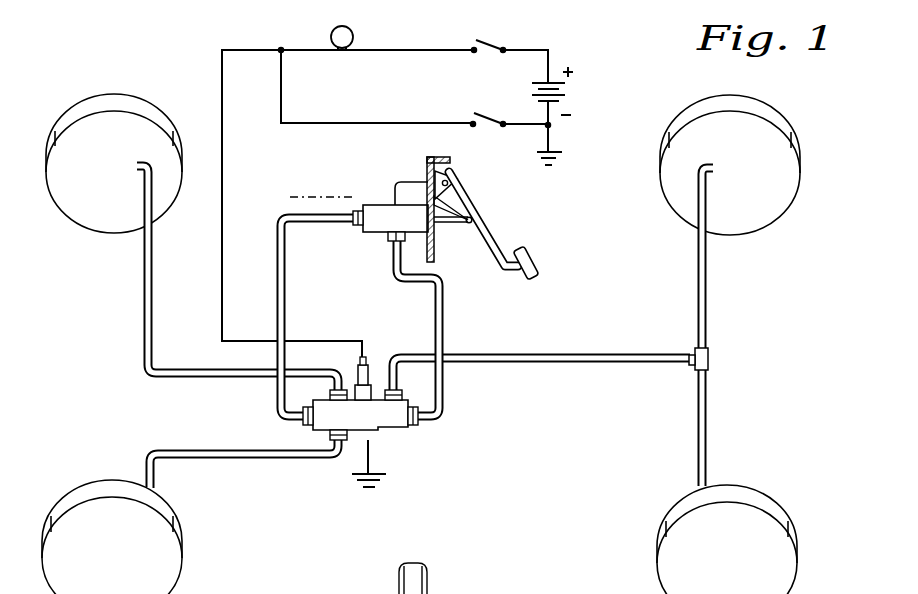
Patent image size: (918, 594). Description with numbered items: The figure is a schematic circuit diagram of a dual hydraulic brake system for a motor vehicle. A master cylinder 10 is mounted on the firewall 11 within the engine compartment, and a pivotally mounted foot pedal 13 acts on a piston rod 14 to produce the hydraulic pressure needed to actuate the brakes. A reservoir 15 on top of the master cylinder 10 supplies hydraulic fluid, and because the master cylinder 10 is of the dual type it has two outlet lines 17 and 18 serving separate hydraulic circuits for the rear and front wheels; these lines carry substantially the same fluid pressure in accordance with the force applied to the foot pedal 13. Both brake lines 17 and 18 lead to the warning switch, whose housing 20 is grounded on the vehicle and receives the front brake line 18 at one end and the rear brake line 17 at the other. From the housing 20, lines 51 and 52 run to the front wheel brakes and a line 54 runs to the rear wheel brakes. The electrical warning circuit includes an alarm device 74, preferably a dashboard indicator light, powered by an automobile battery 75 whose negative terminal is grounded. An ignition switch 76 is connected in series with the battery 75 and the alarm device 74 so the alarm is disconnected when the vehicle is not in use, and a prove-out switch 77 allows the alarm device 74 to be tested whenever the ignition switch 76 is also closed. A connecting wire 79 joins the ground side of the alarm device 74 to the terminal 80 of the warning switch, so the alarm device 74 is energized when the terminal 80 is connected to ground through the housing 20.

The master cylinder 10 is at (377, 205).
The firewall 11 is at (437, 258).
The foot pedal 13 is at (537, 263).
The piston rod 14 is at (449, 226).
The reservoir 15 is at (408, 190).
The outlet line 17 is at (444, 323).
The outlet line 18 is at (287, 267).
The housing 20 is at (403, 431).
The line 51 is at (146, 335).
The line 52 is at (240, 460).
The line 54 is at (578, 363).
The alarm device 74 is at (353, 36).
The battery 75 is at (571, 97).
The ignition switch 76 is at (490, 42).
The prove-out switch 77 is at (488, 126).
The connecting wire 79 is at (221, 256).
The terminal 80 is at (368, 357).